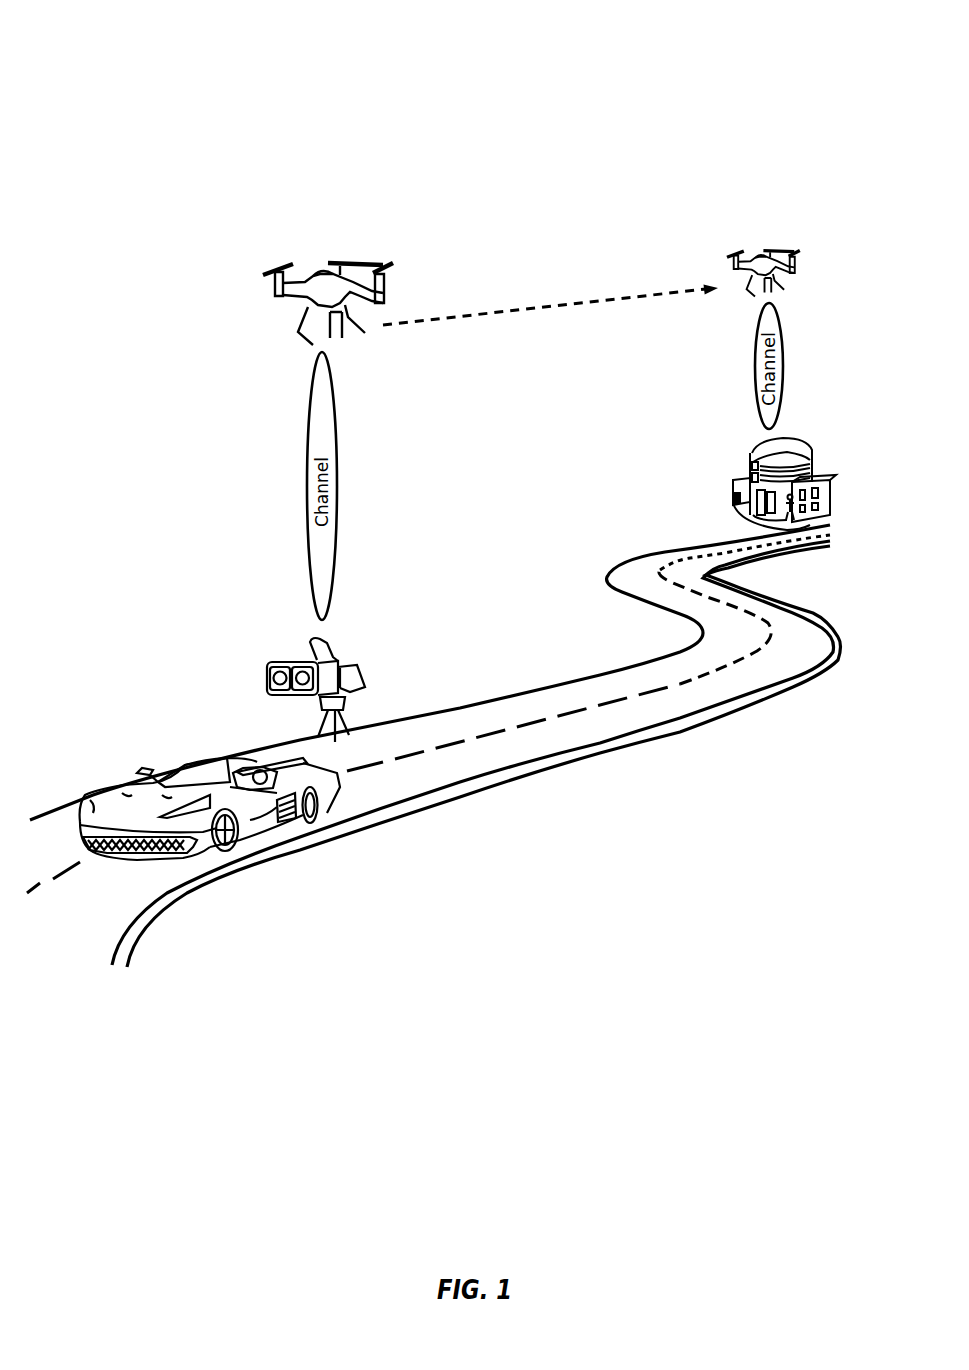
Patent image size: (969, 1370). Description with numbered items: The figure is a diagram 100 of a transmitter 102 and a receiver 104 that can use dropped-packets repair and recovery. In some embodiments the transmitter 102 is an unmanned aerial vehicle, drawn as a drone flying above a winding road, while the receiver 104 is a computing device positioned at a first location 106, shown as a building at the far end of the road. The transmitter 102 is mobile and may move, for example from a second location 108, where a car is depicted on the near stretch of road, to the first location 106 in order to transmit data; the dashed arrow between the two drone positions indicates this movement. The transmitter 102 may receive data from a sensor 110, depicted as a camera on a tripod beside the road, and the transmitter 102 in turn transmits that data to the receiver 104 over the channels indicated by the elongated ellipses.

The diagram 100 is at (107, 57).
The transmitter 102 is at (765, 273).
The receiver 104 is at (795, 520).
The first location 106 is at (717, 412).
The second location 108 is at (142, 486).
The sensor 110 is at (332, 695).